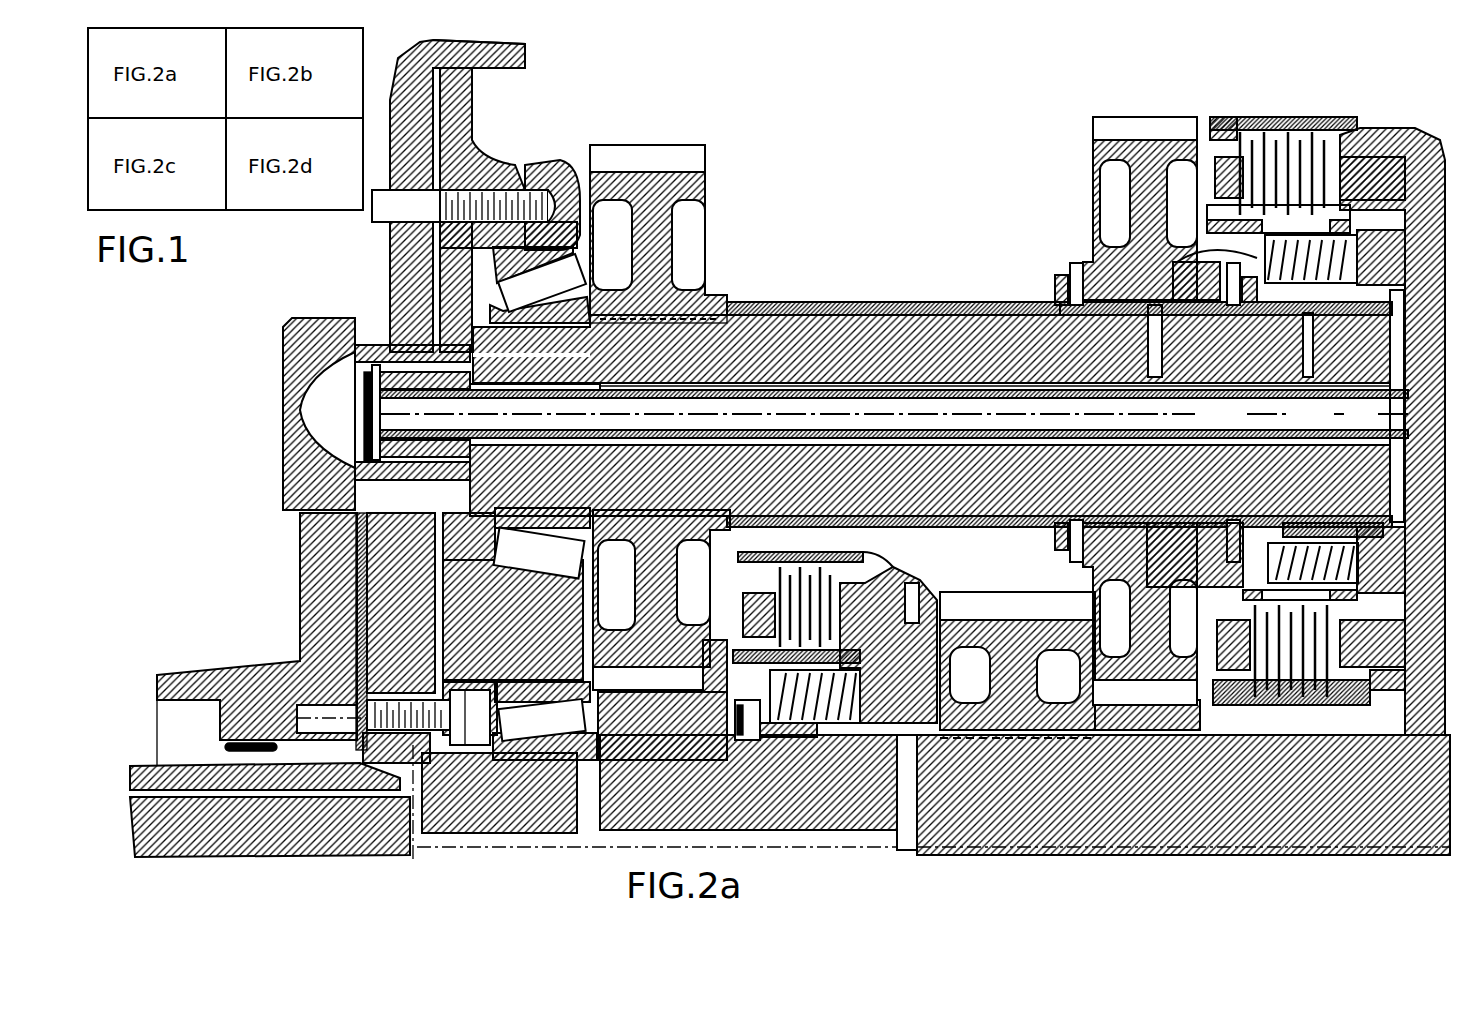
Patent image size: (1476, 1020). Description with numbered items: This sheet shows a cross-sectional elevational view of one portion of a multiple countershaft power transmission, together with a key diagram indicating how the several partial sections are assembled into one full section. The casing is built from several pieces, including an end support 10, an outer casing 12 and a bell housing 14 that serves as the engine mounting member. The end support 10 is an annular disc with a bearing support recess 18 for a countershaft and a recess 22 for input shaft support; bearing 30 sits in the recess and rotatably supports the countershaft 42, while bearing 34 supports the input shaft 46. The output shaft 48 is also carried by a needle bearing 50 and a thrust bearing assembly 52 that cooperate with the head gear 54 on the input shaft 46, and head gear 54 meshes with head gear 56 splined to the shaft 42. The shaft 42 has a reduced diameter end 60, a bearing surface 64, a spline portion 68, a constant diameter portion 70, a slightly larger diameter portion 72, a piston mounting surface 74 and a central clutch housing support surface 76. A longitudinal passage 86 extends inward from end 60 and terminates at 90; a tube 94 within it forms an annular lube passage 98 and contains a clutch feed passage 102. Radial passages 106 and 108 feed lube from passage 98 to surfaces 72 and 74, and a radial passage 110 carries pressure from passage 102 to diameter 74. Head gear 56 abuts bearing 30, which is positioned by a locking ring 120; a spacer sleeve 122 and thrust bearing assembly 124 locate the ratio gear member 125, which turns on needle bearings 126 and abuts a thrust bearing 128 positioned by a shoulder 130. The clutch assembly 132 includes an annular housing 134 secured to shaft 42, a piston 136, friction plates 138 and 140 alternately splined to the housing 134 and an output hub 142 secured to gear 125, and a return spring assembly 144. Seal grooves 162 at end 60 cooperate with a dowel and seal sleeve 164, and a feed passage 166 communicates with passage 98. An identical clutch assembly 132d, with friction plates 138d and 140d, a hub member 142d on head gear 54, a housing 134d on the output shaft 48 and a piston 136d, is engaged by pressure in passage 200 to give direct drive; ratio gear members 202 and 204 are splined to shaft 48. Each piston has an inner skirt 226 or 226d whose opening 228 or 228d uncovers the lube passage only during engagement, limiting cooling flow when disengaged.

The end support 10 is at (453, 133).
The outer casing 12 is at (487, 55).
The bell housing 14 is at (410, 240).
The bearing support recess 18 is at (556, 250).
The recess 22 is at (565, 662).
The bearing 30 is at (575, 265).
The bearing 34 is at (550, 817).
The countershaft 42 is at (830, 298).
The input shaft 46 is at (225, 832).
The output shaft 48 is at (1225, 818).
The needle bearing 50 is at (673, 780).
The thrust bearing assembly 52 is at (757, 767).
The head gear 54 is at (640, 660).
The head gear 56 is at (668, 185).
The reduced diameter end 60 is at (350, 522).
The bearing surface 64 is at (560, 500).
The spline portion 68 is at (663, 293).
The constant diameter portion 70 is at (795, 303).
The slightly larger diameter portion 72 is at (938, 300).
The piston mounting surface 74 is at (1376, 583).
The central clutch housing support surface 76 is at (1425, 545).
The longitudinal passage 86 is at (990, 392).
The passage termination 90 is at (1405, 392).
The tube 94 is at (1035, 388).
The annular lube passage 98 is at (765, 387).
The clutch feed passage 102 is at (312, 425).
The radial fluid passage 106 is at (1133, 262).
The radial fluid passage 108 is at (1258, 386).
The radial passage 110 is at (1308, 414).
The locking ring 120 is at (460, 330).
The spacer sleeve 122 is at (878, 302).
The thrust bearing assembly 124 is at (1068, 296).
The ratio gear member 125 is at (1093, 152).
The needle bearings 126 is at (1103, 560).
The thrust bearing 128 is at (1207, 282).
The shoulder 130 is at (1198, 341).
The clutch assembly 132 is at (1318, 108).
The clutch assembly 132d is at (883, 555).
The annular housing 134 is at (1415, 130).
The housing 134d is at (887, 572).
The annular piston 136 is at (1382, 688).
The piston 136d is at (937, 740).
The friction plates 138 is at (1292, 140).
The friction plates 138d is at (805, 568).
The friction plates 140 is at (1207, 260).
The friction plates 140d is at (765, 640).
The output hub 142 is at (1203, 590).
The hub member 142d is at (693, 755).
The return spring assembly 144 is at (1258, 333).
The seal grooves 162 is at (437, 355).
The dowel and seal sleeve 164 is at (330, 393).
The feed passage 166 is at (470, 430).
The passage 200 is at (897, 760).
The ratio gear member 202 is at (1017, 720).
The ratio gear member 204 is at (1145, 723).
The inner skirt portion 226 is at (1307, 520).
The inner skirt portion 226d is at (815, 795).
The opening 228 is at (1305, 300).
The opening 228d is at (830, 735).